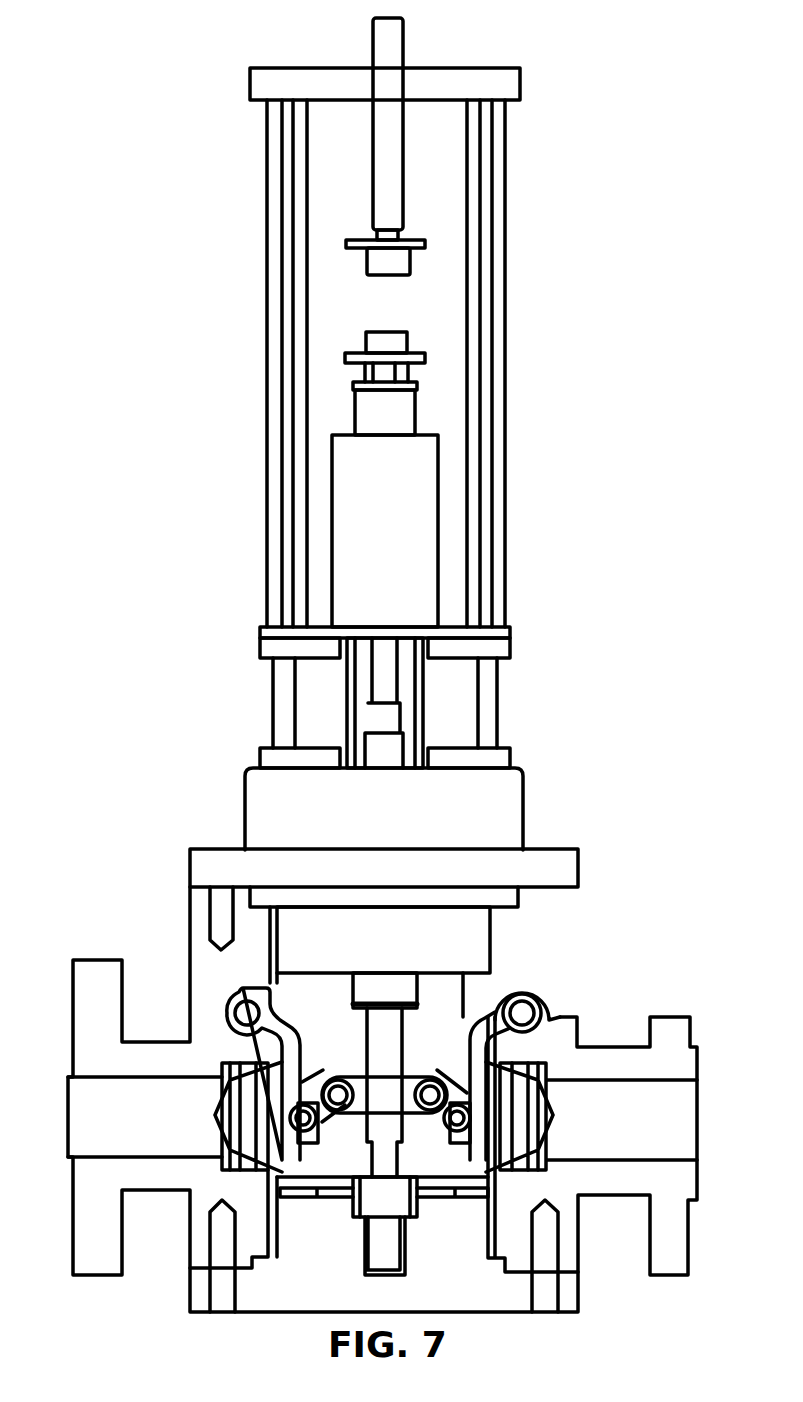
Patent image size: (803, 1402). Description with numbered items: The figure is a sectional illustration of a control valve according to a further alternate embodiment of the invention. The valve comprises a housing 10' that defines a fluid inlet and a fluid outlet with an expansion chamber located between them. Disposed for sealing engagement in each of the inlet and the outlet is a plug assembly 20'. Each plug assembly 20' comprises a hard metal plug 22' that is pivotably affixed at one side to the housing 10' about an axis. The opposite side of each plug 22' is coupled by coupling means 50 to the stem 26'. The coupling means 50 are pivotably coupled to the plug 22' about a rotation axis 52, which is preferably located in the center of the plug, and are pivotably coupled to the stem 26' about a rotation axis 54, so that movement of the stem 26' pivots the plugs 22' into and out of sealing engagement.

The housing 10' is at (405, 1099).
The plug assembly 20' is at (393, 1074).
The hard metal plug 22' is at (420, 1117).
The stem 26' is at (413, 907).
The coupling means 50 is at (440, 1132).
The rotation axis 52 is at (422, 1118).
The rotation axis 54 is at (430, 1095).